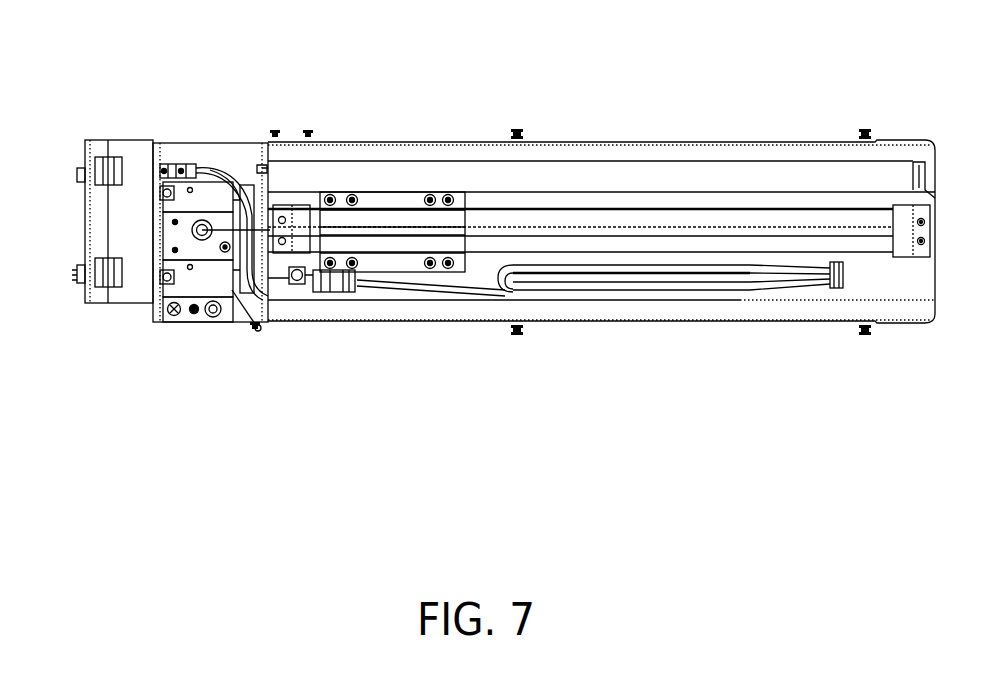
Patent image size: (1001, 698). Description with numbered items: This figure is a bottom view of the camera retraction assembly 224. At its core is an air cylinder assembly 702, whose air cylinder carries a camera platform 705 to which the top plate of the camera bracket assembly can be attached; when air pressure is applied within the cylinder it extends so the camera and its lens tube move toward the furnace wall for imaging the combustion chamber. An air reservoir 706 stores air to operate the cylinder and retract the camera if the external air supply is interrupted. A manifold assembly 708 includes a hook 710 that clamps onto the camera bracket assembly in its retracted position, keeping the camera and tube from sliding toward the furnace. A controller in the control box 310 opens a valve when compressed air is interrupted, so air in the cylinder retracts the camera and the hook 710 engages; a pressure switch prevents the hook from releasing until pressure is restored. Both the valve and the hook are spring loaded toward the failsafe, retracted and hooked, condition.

The camera retraction assembly 224 is at (158, 42).
The control box 310 is at (130, 140).
The manifold assembly 708 is at (213, 182).
The air cylinder assembly 702 is at (580, 208).
The air reservoir 706 is at (750, 192).
The camera platform 705 is at (393, 235).
The hook 710 is at (242, 293).